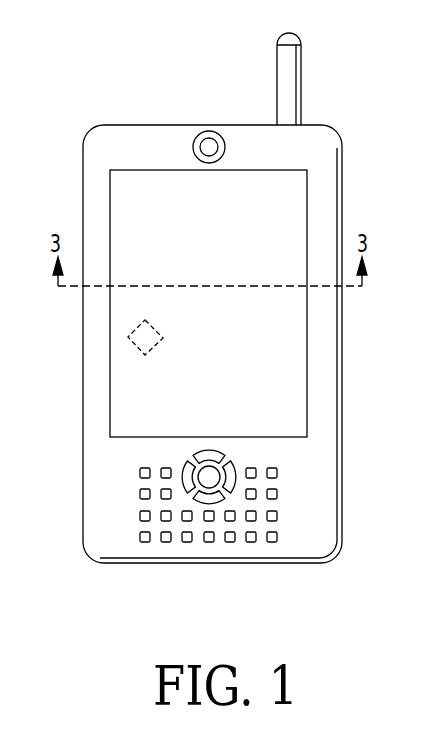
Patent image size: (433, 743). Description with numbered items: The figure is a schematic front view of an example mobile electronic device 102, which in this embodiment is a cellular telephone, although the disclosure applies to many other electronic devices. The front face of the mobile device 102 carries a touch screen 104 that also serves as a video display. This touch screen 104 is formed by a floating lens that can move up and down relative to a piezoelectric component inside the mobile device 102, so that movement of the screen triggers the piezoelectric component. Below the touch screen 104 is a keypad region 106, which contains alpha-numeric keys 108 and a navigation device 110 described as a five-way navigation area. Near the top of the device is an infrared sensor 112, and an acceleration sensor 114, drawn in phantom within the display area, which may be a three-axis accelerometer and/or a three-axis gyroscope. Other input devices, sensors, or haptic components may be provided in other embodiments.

The mobile electronic device 102 is at (95, 48).
The touch screen 104 is at (222, 335).
The keypad region 106 is at (265, 528).
The alpha-numeric keys 108 is at (277, 500).
The navigation device 110 is at (235, 461).
The infrared sensor 112 is at (209, 131).
The acceleration sensor 114 is at (150, 342).